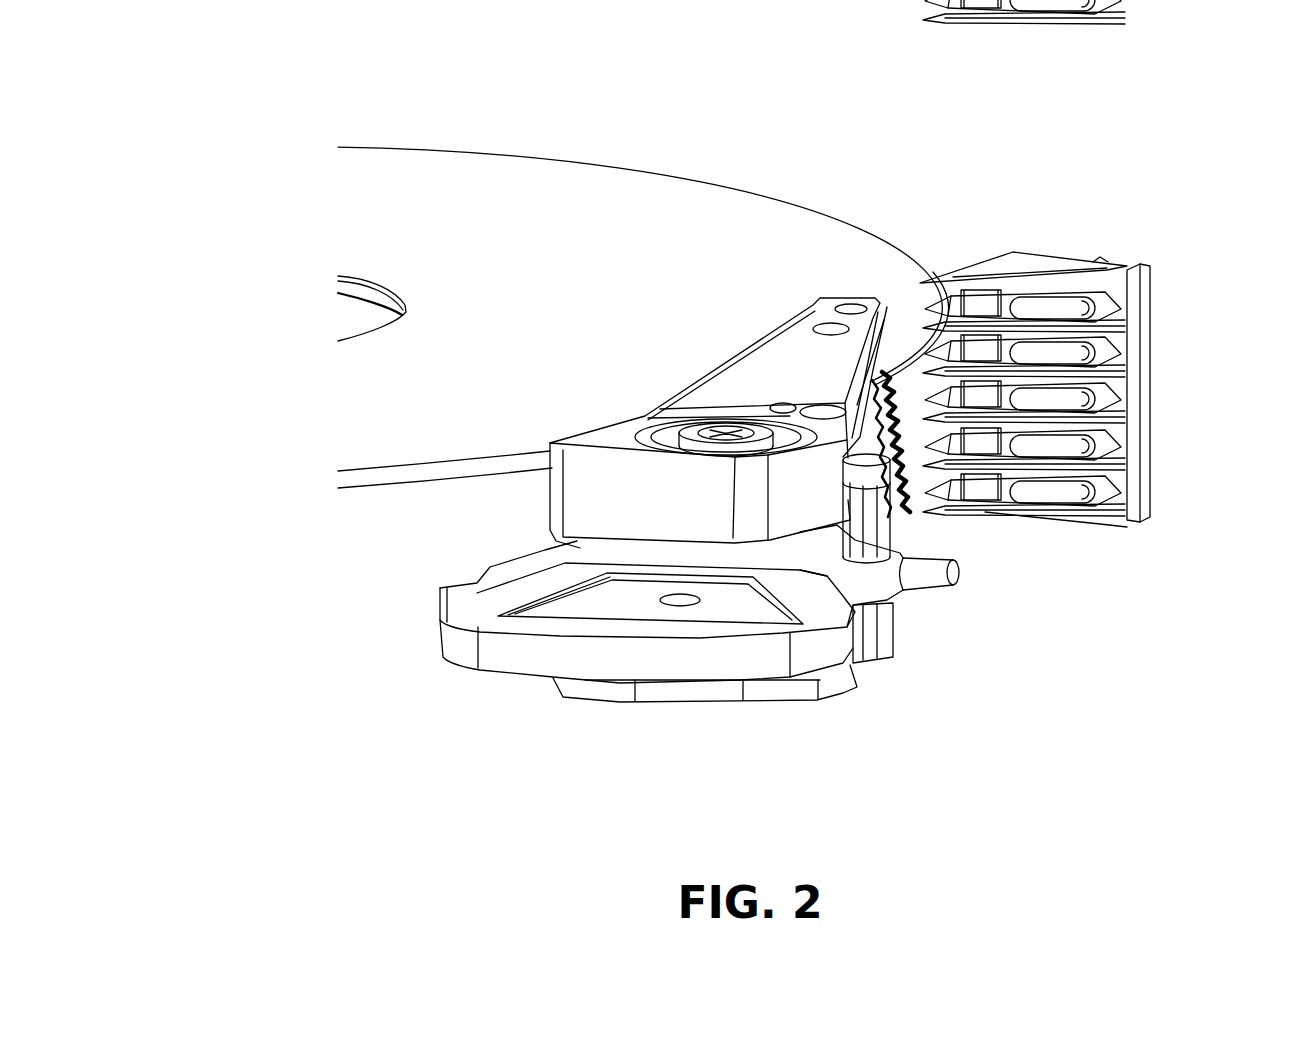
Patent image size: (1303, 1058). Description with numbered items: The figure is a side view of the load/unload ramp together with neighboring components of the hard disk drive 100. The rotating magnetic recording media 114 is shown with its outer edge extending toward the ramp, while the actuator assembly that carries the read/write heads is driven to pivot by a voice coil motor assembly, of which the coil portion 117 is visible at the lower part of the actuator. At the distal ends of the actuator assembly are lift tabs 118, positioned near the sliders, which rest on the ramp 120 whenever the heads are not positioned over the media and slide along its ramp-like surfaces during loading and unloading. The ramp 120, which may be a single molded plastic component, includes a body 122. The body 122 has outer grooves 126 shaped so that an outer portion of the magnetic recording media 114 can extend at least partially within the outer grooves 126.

The hard disk drive 100 is at (272, 88).
The magnetic recording media 114 is at (732, 205).
The coil portion 117 is at (588, 658).
The lift tabs 118 is at (888, 275).
The load/unload ramp 120 is at (1078, 222).
The body 122 is at (1134, 327).
The outer grooves 126 is at (935, 482).